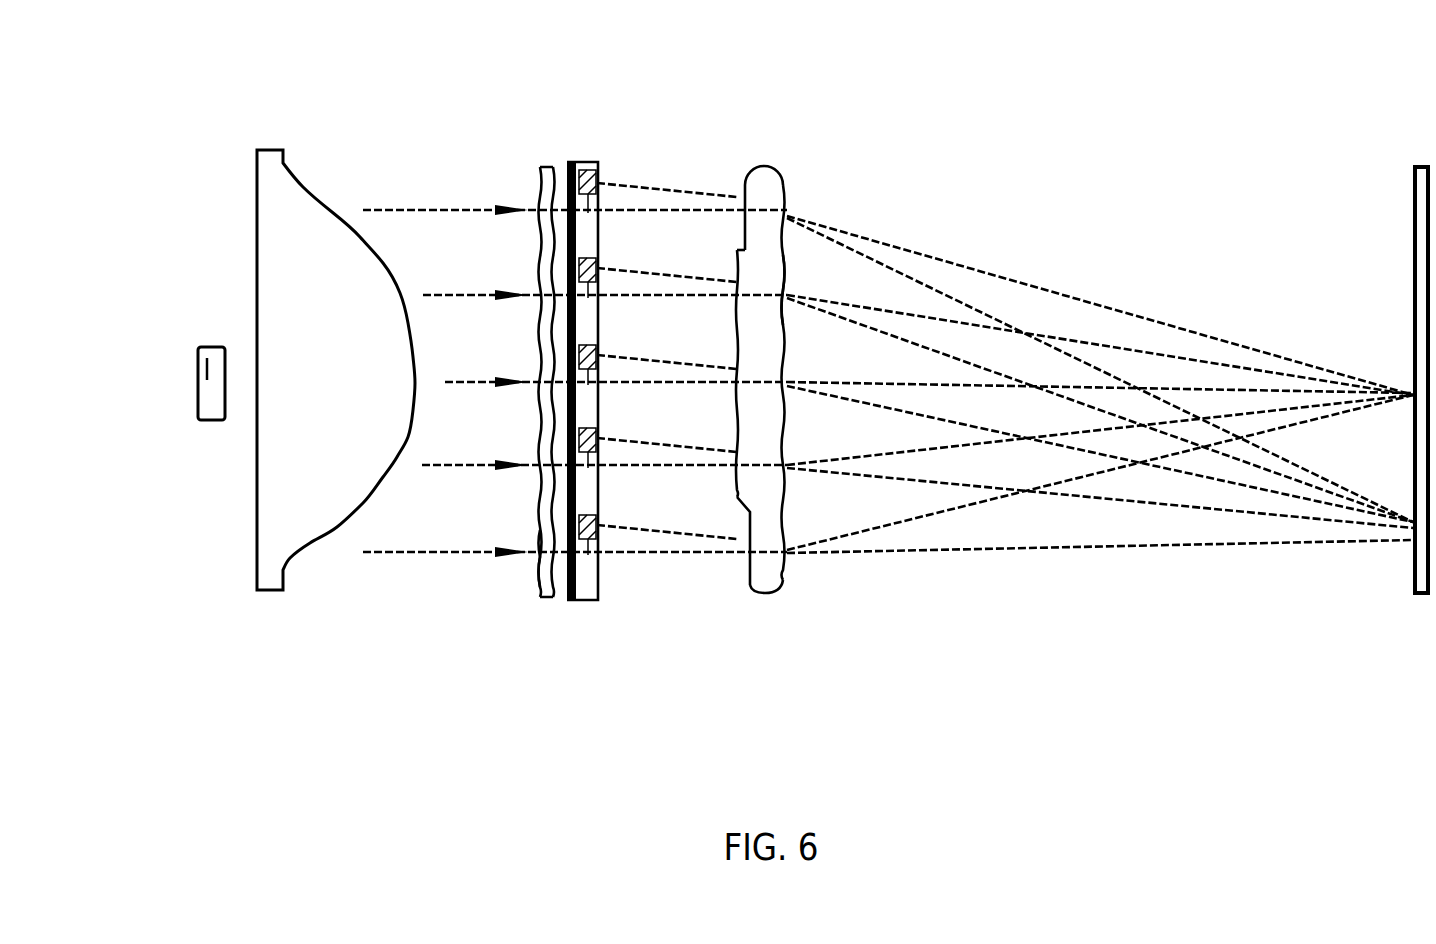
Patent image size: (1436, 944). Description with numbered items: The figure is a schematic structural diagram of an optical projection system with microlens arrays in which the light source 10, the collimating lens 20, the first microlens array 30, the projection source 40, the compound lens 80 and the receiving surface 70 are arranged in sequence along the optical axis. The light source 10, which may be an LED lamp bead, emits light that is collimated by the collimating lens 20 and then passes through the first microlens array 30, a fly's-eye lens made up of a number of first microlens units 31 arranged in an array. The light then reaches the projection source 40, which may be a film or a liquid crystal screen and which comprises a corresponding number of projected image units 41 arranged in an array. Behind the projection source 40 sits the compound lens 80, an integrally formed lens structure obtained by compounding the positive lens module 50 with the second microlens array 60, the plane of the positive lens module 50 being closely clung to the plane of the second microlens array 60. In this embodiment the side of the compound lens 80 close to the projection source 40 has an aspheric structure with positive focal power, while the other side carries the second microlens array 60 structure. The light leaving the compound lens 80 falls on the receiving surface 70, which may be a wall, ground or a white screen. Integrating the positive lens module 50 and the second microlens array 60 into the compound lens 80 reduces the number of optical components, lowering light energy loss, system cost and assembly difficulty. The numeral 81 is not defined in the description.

The light source 10 is at (200, 350).
The collimating lens 20 is at (308, 300).
The first microlens array 30 is at (560, 597).
The first microlens unit 31 is at (538, 553).
The projection source 40 is at (537, 404).
The projected image unit 41 is at (568, 215).
The positive lens module 50 is at (740, 510).
The second microlens array 60 is at (787, 510).
The receiving surface 70 is at (1413, 243).
The compound lens 80 is at (816, 404).
The exit surface 81 is at (790, 283).